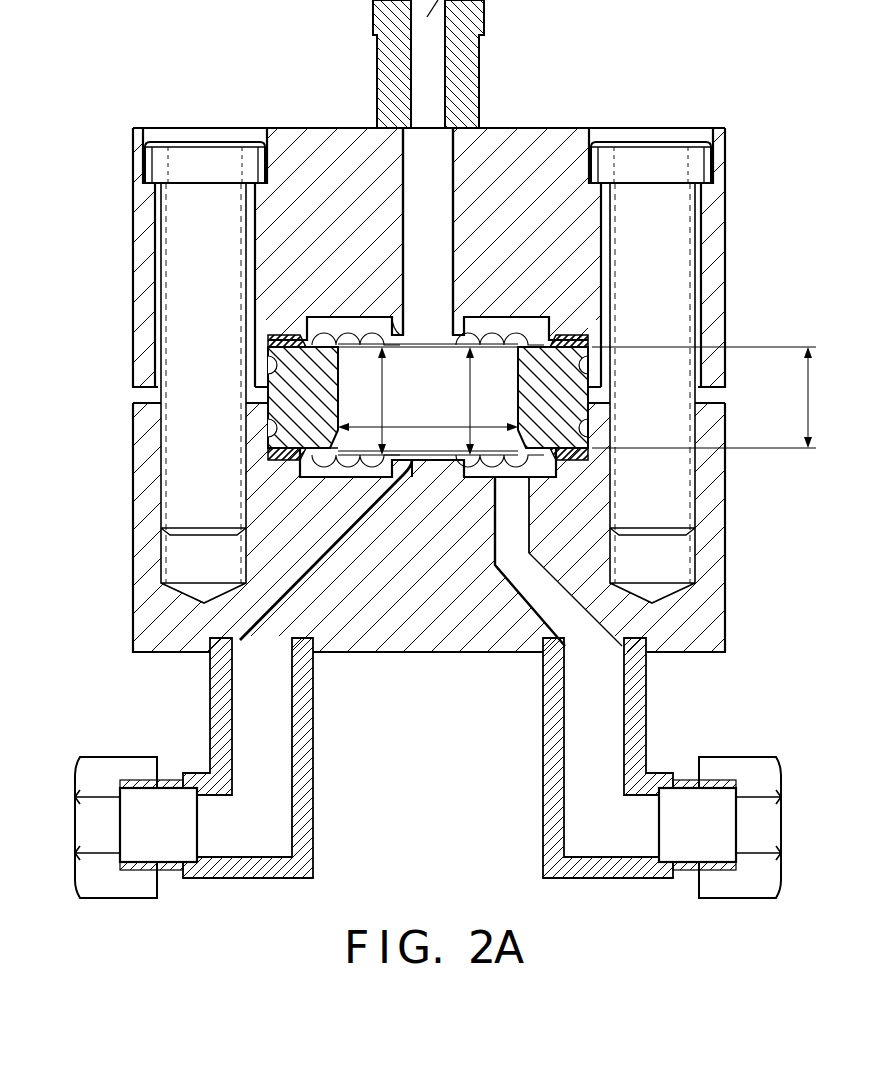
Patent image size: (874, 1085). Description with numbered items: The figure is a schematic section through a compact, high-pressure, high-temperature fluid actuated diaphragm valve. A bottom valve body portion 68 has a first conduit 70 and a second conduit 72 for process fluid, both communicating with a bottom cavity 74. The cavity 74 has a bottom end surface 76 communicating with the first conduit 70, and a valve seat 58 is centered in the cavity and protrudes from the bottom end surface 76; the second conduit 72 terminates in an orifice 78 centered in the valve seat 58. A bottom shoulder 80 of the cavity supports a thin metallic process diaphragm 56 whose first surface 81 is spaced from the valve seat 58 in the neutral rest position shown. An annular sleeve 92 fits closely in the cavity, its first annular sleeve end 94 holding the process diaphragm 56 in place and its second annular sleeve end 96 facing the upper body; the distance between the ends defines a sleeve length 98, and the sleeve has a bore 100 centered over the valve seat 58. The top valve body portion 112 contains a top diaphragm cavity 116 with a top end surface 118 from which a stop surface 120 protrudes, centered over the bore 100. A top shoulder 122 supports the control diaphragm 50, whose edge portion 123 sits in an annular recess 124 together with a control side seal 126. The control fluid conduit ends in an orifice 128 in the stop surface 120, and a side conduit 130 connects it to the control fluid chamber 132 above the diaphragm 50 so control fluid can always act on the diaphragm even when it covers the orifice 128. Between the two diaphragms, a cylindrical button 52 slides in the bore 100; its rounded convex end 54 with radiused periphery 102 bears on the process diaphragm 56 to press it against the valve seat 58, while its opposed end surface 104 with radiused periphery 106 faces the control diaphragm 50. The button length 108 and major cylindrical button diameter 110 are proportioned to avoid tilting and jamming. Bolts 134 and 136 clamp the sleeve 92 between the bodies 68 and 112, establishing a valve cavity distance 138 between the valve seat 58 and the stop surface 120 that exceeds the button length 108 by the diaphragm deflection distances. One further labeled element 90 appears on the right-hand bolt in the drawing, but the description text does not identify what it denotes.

The control diaphragm 50 is at (336, 128).
The button 52 is at (282, 402).
The rounded convex end 54 is at (322, 470).
The process diaphragm 56 is at (296, 478).
The valve seat 58 is at (390, 478).
The bottom valve body portion 68 is at (132, 573).
The first conduit 70 is at (606, 718).
The second conduit 72 is at (246, 718).
The bottom cavity 74 is at (246, 425).
The bottom end surface 76 is at (348, 480).
The orifice 78 is at (416, 478).
The bottom shoulder 80 is at (548, 486).
The first surface 81 is at (437, 478).
The bolt 90 is at (545, 466).
The annular sleeve 92 is at (592, 410).
The first annular sleeve end 94 is at (600, 442).
The second annular sleeve end 96 is at (594, 383).
The sleeve length 98 is at (719, 397).
The bore 100 is at (522, 462).
The periphery 102 is at (527, 482).
The opposed end surface 104 is at (447, 341).
The periphery 106 is at (552, 320).
The button length 108 is at (472, 401).
The major cylindrical button diameter 110 is at (463, 425).
The top valve body portion 112 is at (135, 150).
The top diaphragm cavity 116 is at (276, 358).
The top end surface 118 is at (351, 312).
The stop surface 120 is at (466, 322).
The top shoulder 122 is at (290, 338).
The edge portion 123 is at (562, 336).
The annular recess 124 is at (592, 350).
The control side seal 126 is at (580, 344).
The orifice 128 is at (440, 322).
The side conduit 130 is at (394, 322).
The control fluid chamber 132 is at (506, 322).
The bolt 134 is at (180, 141).
The bolt 136 is at (653, 141).
The valve cavity distance 138 is at (385, 388).